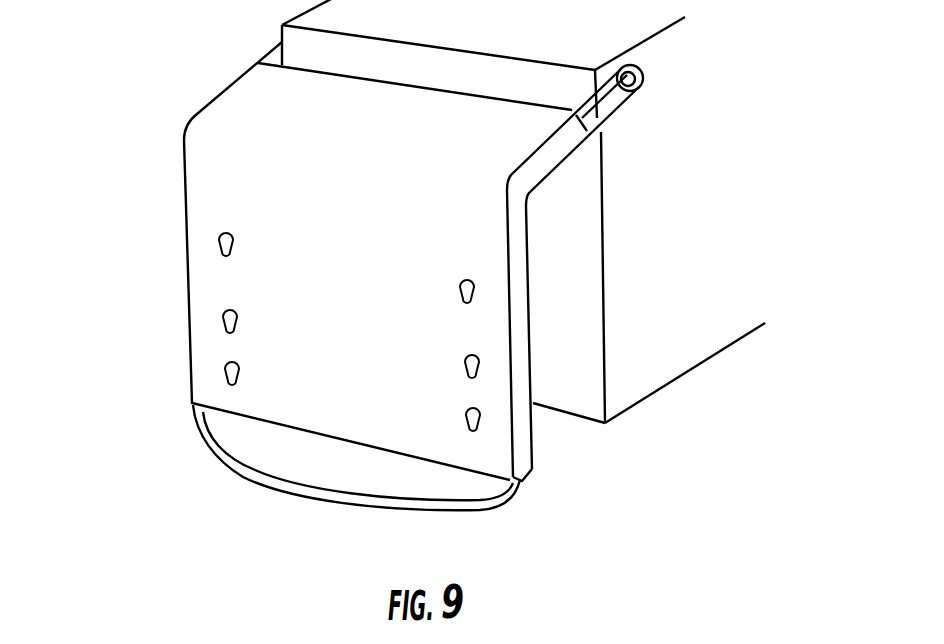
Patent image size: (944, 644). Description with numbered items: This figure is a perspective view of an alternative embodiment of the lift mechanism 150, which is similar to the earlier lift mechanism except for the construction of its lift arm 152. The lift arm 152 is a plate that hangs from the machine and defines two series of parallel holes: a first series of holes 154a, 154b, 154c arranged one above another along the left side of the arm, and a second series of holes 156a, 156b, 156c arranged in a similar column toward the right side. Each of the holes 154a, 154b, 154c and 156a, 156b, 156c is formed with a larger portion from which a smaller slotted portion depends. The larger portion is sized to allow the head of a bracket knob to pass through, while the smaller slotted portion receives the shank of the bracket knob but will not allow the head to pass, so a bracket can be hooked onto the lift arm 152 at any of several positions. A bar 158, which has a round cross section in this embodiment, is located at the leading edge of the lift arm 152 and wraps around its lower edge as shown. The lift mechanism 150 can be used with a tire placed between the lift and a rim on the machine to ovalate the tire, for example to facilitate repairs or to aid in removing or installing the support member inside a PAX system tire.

The lift mechanism 150 is at (133, 170).
The lift arm 152 is at (203, 271).
The hole 154a is at (241, 371).
The hole 154b is at (239, 319).
The hole 154c is at (234, 243).
The hole 156a is at (465, 416).
The hole 156b is at (464, 362).
The hole 156c is at (460, 286).
The bar 158 is at (253, 475).